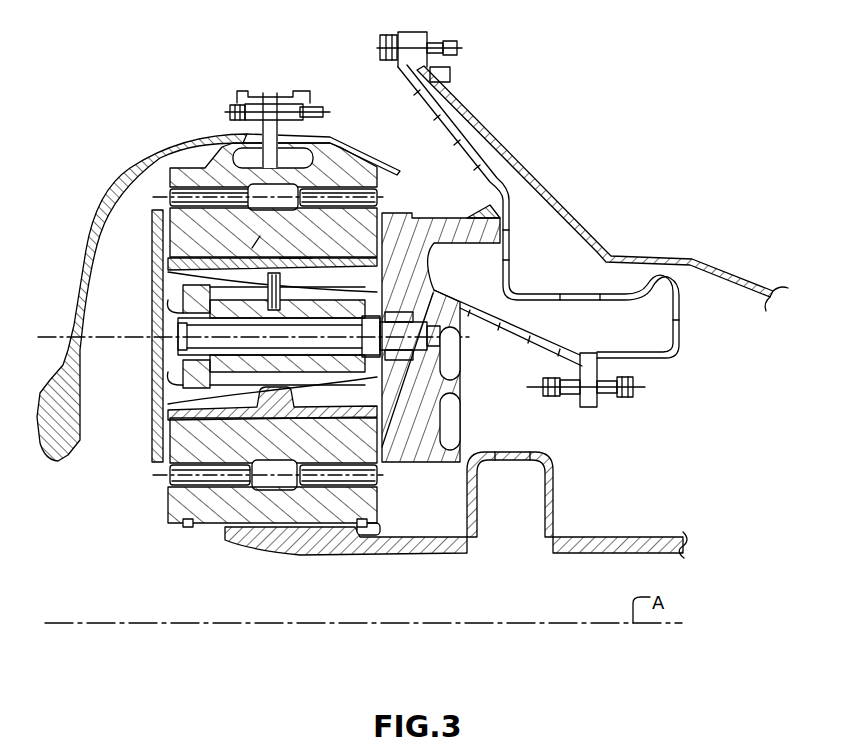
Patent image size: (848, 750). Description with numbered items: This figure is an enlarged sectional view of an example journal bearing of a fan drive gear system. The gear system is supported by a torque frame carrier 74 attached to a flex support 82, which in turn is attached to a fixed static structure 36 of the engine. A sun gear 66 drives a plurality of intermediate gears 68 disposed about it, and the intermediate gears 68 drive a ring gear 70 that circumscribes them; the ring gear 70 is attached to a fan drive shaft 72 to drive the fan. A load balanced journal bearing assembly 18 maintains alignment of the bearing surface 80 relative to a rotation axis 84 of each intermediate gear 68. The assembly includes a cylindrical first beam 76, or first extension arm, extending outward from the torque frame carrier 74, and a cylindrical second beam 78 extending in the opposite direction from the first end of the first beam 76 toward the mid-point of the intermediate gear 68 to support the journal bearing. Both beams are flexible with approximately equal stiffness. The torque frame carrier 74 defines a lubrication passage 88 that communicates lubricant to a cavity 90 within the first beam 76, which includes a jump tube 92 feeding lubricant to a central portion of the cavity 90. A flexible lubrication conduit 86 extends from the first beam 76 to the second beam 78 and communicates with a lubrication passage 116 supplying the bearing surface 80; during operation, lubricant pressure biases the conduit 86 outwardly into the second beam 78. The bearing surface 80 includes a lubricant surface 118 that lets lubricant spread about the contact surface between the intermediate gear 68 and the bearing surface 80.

The journal bearing assembly 18 is at (143, 418).
The fixed static structure 36 is at (562, 205).
The sun gear 66 is at (172, 507).
The intermediate gear 68 is at (373, 223).
The ring gear 70 is at (346, 166).
The fan drive shaft 72 is at (72, 272).
The torque frame carrier 74 is at (417, 272).
The first beam 76 is at (300, 360).
The second beam 78 is at (210, 273).
The bearing surface 80 is at (198, 247).
The flex support 82 is at (517, 290).
The rotation axis 84 is at (180, 352).
The flexible lubrication conduit 86 is at (281, 295).
The lubrication passage 88 is at (447, 420).
The cavity 90 is at (368, 373).
The jump tube 92 is at (372, 309).
The lubrication passage 116 is at (295, 260).
The lubricant surface 118 is at (260, 236).